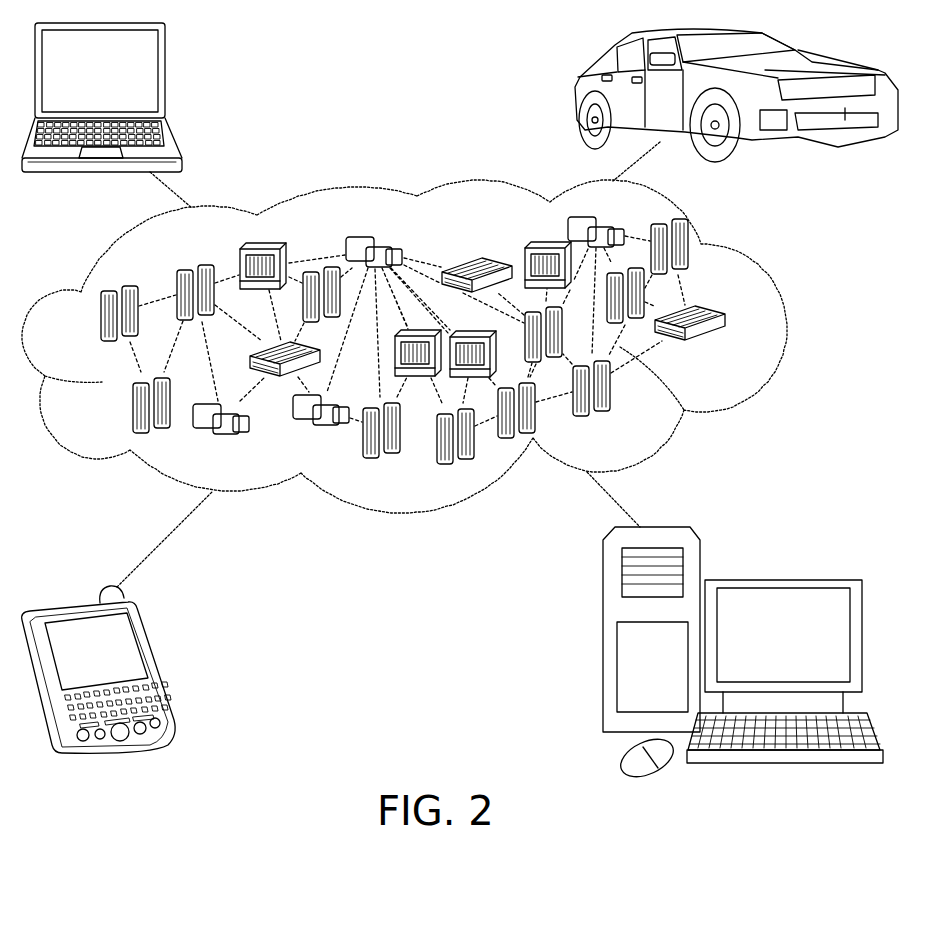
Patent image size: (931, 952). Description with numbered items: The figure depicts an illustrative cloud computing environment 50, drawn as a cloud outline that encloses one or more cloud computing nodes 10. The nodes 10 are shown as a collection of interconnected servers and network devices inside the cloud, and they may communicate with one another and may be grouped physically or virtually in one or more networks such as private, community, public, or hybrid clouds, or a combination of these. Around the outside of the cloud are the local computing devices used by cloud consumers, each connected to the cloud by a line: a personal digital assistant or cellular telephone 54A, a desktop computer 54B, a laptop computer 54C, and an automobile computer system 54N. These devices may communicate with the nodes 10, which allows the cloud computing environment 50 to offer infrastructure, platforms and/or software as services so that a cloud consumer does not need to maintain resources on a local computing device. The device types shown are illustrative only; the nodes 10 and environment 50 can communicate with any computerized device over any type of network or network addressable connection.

The cloud computing nodes 10 is at (729, 348).
The cloud computing environment 50 is at (785, 322).
The personal digital assistant or cellular telephone 54A is at (148, 662).
The desktop computer 54B is at (782, 577).
The laptop computer 54C is at (165, 78).
The automobile computer system 54N is at (578, 96).